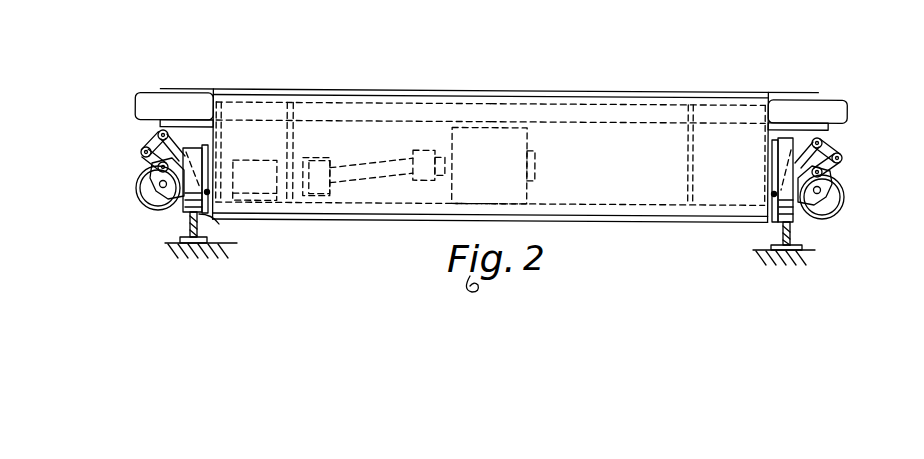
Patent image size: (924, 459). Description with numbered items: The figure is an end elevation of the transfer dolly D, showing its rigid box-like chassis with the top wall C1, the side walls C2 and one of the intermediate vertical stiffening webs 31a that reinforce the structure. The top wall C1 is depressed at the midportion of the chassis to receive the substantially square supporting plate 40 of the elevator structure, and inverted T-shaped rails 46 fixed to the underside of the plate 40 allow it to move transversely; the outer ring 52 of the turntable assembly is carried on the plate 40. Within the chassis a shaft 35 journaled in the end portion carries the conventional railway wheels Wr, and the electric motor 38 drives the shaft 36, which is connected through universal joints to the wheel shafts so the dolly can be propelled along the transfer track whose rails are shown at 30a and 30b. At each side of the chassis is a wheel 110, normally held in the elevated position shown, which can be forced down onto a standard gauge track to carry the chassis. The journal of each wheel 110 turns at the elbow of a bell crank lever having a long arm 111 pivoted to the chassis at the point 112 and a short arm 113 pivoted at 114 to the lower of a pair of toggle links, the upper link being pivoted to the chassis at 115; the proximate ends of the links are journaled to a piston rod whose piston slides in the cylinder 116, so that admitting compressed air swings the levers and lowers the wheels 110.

The transfer dolly D is at (753, 82).
The outer ring 52 is at (662, 93).
The supporting plate 40 is at (142, 107).
The rails 46 is at (829, 124).
The top wall C1 is at (217, 110).
The side walls C2 is at (769, 104).
The intermediate vertical stiffening web 31a is at (294, 144).
The shaft 35 is at (245, 174).
The shaft 36 is at (360, 171).
The electric motor 38 is at (489, 136).
The wheels 110 is at (156, 200).
The long arm 111 is at (180, 192).
The pivot point 112 is at (205, 182).
The short arm 113 is at (157, 177).
The pivot 114 is at (142, 152).
The pivot 115 is at (160, 136).
The cylinder 116 is at (184, 158).
The railway wheels Wr is at (774, 220).
The rail 30a is at (218, 246).
The rail 30b is at (803, 243).